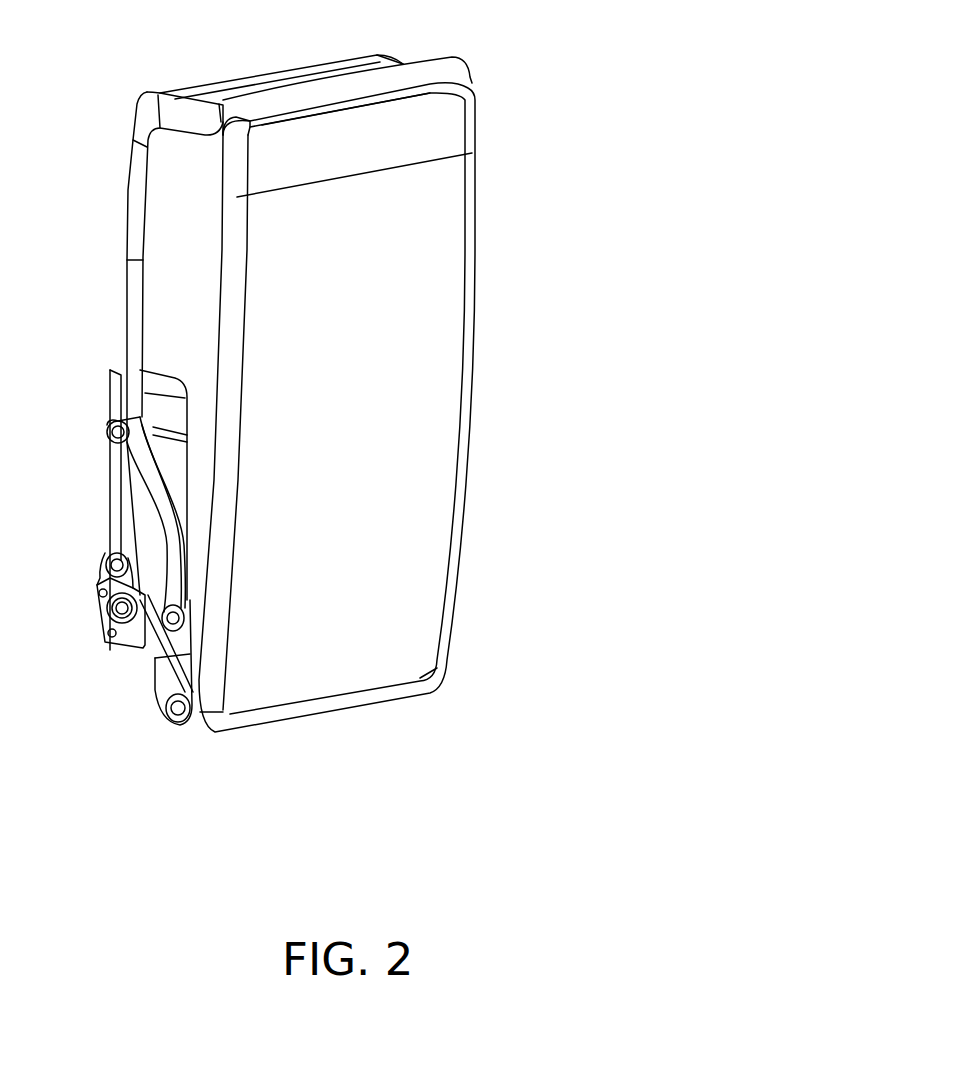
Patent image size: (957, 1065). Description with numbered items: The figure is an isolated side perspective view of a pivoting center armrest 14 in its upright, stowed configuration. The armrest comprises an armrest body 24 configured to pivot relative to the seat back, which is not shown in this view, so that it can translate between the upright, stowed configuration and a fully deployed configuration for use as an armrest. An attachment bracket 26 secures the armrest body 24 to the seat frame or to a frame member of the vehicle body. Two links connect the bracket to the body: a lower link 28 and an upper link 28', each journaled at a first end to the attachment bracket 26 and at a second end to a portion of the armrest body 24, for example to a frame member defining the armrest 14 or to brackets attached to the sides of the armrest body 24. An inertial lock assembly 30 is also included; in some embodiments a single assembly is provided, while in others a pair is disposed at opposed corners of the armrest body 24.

The pivoting center armrest 14 is at (547, 62).
The armrest body 24 is at (373, 371).
The attachment bracket 26 is at (110, 477).
The upper link 28' is at (110, 524).
The lower link 28 is at (131, 659).
The inertial lock assembly 30 is at (92, 643).